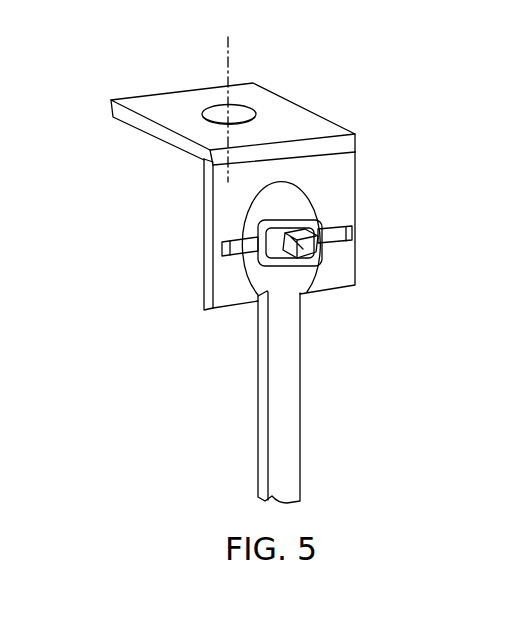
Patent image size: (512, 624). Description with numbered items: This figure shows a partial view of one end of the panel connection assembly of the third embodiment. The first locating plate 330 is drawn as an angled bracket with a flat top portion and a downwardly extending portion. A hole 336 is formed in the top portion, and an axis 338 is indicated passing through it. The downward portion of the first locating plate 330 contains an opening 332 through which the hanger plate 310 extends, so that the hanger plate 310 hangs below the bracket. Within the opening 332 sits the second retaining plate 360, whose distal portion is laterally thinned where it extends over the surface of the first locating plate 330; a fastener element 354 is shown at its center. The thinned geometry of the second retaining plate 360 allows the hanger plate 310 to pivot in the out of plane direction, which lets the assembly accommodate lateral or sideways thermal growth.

The hanger plate 310 is at (300, 442).
The first locating plate 330 is at (356, 173).
The opening in bracket 332 is at (248, 218).
The mounting hole 336 is at (248, 112).
The axis 338 is at (229, 49).
The nut 354 is at (322, 248).
The second retaining plate 360 is at (354, 232).